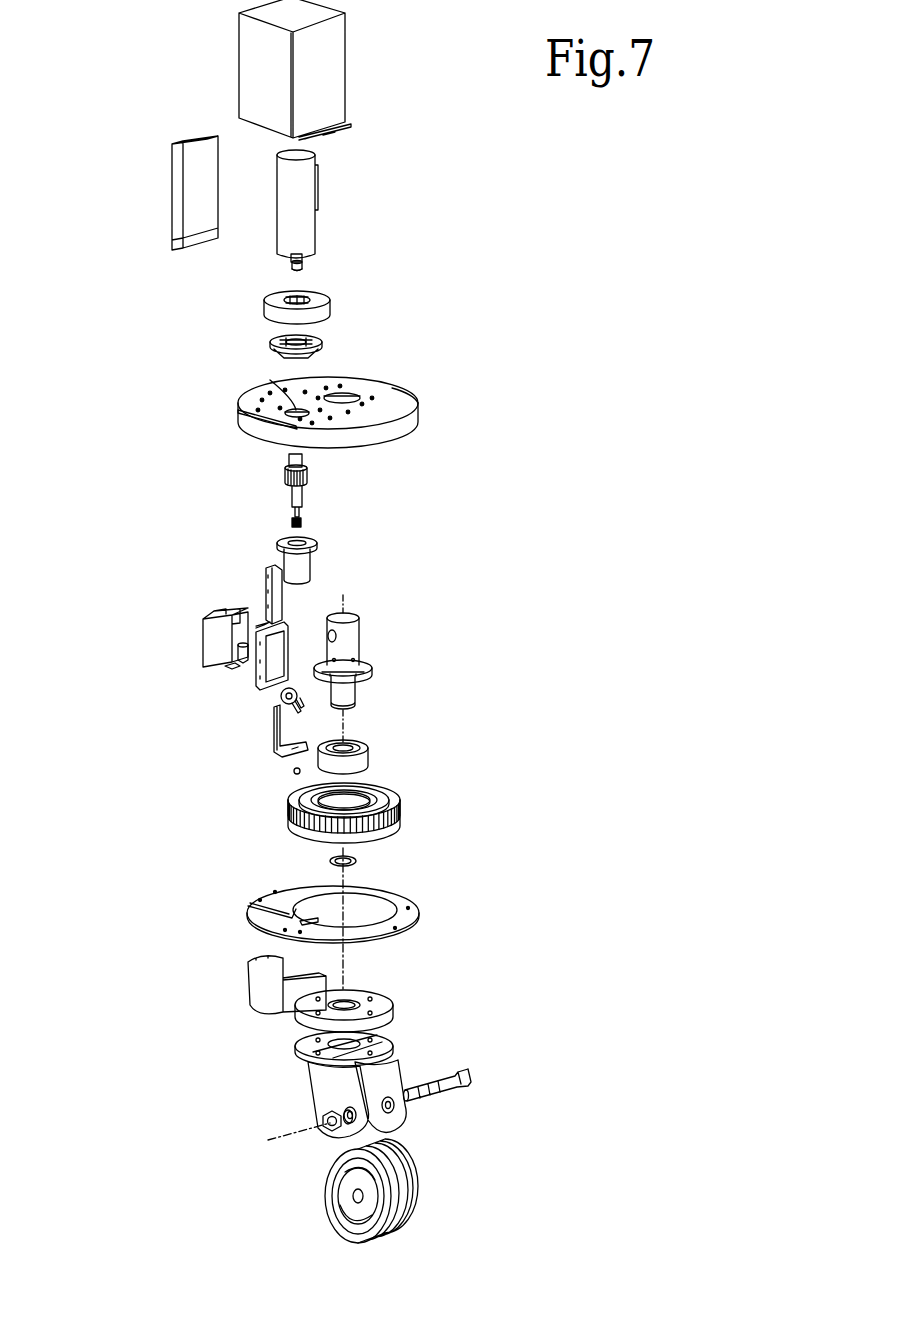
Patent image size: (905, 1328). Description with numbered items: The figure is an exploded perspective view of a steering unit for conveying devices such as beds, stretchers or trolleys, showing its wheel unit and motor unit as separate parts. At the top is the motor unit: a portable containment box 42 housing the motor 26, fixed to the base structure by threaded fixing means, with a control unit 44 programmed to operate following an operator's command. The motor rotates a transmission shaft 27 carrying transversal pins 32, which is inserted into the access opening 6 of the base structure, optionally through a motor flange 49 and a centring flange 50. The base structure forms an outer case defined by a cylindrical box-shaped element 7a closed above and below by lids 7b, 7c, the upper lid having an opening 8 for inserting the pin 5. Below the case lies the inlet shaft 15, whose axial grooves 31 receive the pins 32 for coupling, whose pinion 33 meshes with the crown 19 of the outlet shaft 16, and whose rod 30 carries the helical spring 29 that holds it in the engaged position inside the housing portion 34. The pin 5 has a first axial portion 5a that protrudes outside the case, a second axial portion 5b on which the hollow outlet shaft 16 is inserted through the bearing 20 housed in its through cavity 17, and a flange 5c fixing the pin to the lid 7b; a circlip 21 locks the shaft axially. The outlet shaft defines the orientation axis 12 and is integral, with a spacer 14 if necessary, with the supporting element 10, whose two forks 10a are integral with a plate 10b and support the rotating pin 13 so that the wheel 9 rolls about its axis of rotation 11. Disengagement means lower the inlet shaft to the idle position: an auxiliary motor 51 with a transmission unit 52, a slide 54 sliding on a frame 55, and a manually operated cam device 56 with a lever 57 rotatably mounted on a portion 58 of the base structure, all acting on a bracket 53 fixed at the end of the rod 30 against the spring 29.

The containment box 42 is at (325, 70).
The control unit 44 is at (198, 165).
The motor 26 is at (300, 212).
The transversal pin 32 is at (302, 262).
The transmission shaft 27 is at (292, 268).
The motor flange 49 is at (320, 300).
The centring flange 50 is at (278, 340).
The box-shaped element 7a is at (412, 426).
The lid 7b is at (392, 388).
The opening 8 is at (355, 392).
The access opening 6 is at (290, 393).
The axial groove 31 is at (307, 457).
The pinion 33 is at (290, 468).
The rod 30 is at (275, 488).
The inlet shaft 15 is at (290, 475).
The helical spring 29 is at (292, 522).
The housing portion 34 is at (298, 563).
The frame 55 is at (268, 578).
The slide 54 is at (285, 600).
The auxiliary motor 51 is at (202, 622).
The transmission unit 52 is at (203, 650).
The cam device 56 is at (278, 697).
The lever 57 is at (301, 708).
The bracket 53 is at (277, 745).
The orientation axis 12 is at (343, 596).
The pin 5 is at (419, 679).
The first axial portion 5a is at (352, 632).
The flange 5c is at (371, 668).
The second axial portion 5b is at (358, 703).
The bearing 20 is at (364, 762).
The outlet shaft 16 is at (335, 819).
The through cavity 17 is at (298, 794).
The crown 19 is at (290, 818).
The circlip 21 is at (357, 861).
The lid 7c is at (418, 916).
The portion of the base structure 58 is at (257, 992).
The spacer 14 is at (380, 1002).
The plate 10b is at (390, 1035).
The supporting element 10 is at (322, 1078).
The axis of rotation 11 is at (500, 1074).
The rotating pin 13 is at (438, 1093).
The forks 10a is at (330, 1100).
The wheel 9 is at (417, 1195).